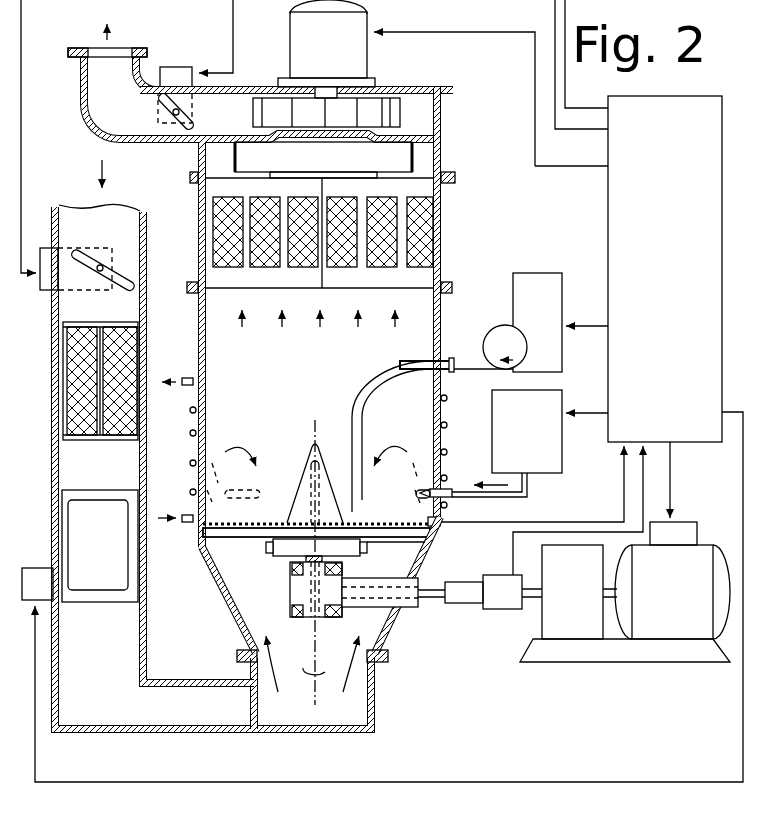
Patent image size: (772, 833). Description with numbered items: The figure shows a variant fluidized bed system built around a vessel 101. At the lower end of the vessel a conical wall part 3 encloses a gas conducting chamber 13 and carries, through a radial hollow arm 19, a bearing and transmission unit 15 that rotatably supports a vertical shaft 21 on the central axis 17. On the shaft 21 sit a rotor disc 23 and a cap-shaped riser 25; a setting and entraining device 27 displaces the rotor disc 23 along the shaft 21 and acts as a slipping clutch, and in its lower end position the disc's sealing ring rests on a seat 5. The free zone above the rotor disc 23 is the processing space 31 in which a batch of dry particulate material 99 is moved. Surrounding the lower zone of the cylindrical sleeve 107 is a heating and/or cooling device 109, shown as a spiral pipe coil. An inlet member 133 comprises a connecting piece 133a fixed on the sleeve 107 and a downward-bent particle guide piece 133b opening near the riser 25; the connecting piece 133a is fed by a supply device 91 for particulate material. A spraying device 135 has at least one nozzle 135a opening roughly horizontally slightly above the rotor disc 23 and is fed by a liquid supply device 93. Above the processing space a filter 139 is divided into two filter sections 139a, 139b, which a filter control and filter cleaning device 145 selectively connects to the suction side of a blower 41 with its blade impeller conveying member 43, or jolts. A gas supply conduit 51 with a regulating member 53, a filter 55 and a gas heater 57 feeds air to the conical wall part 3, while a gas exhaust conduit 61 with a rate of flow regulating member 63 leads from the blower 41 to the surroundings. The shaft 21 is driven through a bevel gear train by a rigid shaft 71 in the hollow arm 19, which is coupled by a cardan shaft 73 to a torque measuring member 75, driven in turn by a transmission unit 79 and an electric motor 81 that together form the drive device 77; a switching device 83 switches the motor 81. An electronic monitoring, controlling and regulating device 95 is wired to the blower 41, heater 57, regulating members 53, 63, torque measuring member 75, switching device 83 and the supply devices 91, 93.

The conical wall part 3 is at (230, 605).
The seat 5 is at (197, 540).
The gas conducting chamber 13 is at (385, 625).
The bearing and transmission unit 15 is at (290, 598).
The axis 17 is at (248, 426).
The radial hollow arm 19 is at (400, 604).
The shaft 21 is at (290, 556).
The rotor disc 23 is at (437, 540).
The riser 25 is at (303, 463).
The setting and entraining device 27 is at (370, 552).
The processing space 31 is at (195, 450).
The blower 41 is at (348, 52).
The conveying member 43 is at (441, 118).
The gas supply conduit 51 is at (53, 413).
The regulating member 53 is at (80, 272).
The filter 55 is at (77, 360).
The gas heater 57 is at (67, 538).
The gas exhaust conduit 61 is at (88, 122).
The rate of flow regulating member 63 is at (181, 108).
The rigid shaft 71 is at (368, 622).
The cardan shaft 73 is at (468, 600).
The torque measuring member 75 is at (506, 605).
The drive device 77 is at (583, 664).
The transmission unit 79 is at (567, 608).
The electric motor 81 is at (662, 617).
The switching device 83 is at (693, 533).
The supply device 91 is at (533, 278).
The supply device 93 is at (560, 457).
The electronic monitoring, controlling and/or regulating device 95 is at (608, 205).
The particulate material 99 is at (252, 522).
The vessel 101 is at (194, 279).
The cylindrical sleeve 107 is at (197, 343).
The heating and/or cooling device 109 is at (191, 436).
The inlet member 133 is at (458, 360).
The connecting piece 133a is at (450, 357).
The particle guide piece 133b is at (365, 400).
The spraying device 135 is at (448, 491).
The nozzle 135a is at (260, 487).
The filter 139 is at (400, 160).
The filter section 139a is at (218, 228).
The filter section 139b is at (427, 230).
The filter control and filter cleaning device 145 is at (373, 115).